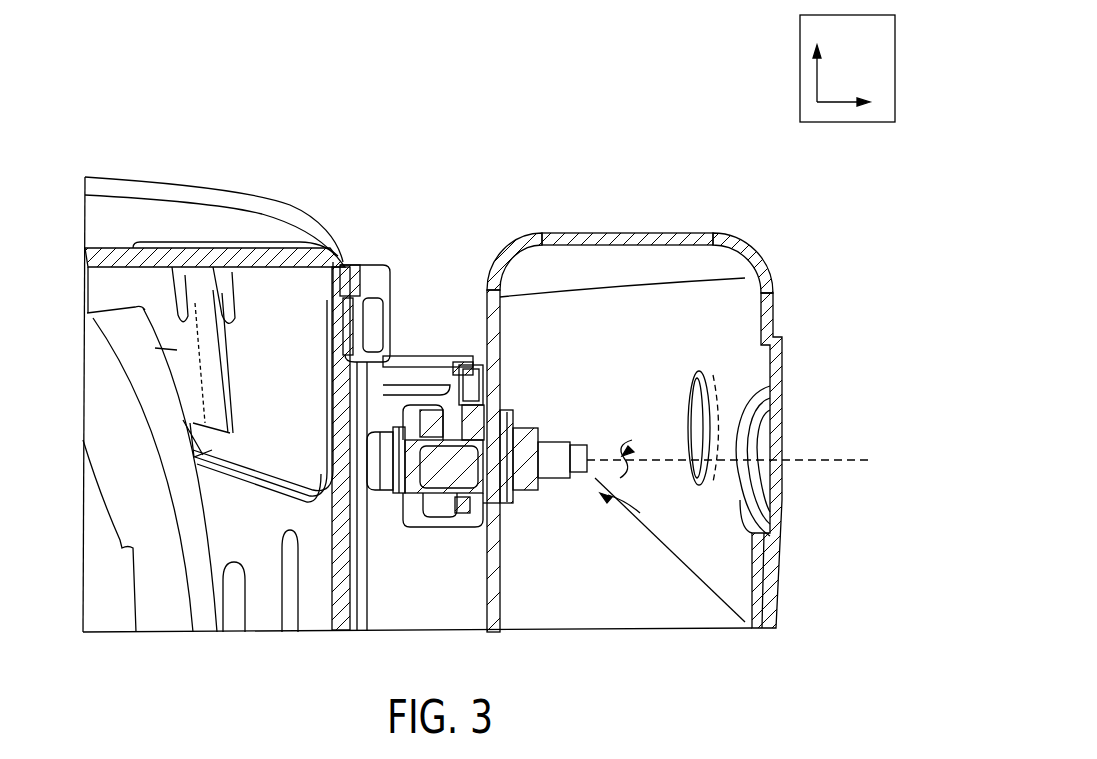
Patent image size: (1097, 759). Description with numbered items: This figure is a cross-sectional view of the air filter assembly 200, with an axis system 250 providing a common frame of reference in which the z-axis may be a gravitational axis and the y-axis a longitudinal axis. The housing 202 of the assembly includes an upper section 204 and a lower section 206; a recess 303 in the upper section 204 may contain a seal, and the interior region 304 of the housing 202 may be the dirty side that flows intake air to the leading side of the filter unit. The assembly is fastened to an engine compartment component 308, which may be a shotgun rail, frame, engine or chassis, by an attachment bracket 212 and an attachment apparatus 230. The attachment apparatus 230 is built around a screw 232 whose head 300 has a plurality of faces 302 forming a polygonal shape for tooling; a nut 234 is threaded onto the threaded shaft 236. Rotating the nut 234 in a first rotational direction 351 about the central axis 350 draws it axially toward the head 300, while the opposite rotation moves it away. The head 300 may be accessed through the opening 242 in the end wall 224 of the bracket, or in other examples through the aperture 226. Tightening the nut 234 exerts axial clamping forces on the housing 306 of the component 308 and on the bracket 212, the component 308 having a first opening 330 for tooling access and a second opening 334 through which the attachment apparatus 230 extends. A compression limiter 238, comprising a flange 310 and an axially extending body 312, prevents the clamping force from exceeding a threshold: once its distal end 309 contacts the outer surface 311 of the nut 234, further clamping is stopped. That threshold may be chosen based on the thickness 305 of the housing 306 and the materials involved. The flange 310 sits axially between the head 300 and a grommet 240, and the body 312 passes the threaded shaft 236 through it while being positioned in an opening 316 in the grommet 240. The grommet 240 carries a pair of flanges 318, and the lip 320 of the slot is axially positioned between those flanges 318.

The air filter assembly 200 is at (862, 228).
The housing 202 is at (308, 198).
The upper section 204 is at (233, 212).
The lower section 206 is at (353, 622).
The attachment bracket 212 is at (408, 356).
The end wall 224 is at (413, 356).
The aperture 226 is at (432, 548).
The attachment apparatus 230 is at (640, 513).
The screw 232 is at (588, 463).
The nut 234 is at (515, 428).
The threaded shaft 236 is at (552, 478).
The compression limiter 238 is at (437, 356).
The grommet 240 is at (485, 505).
The opening 242 is at (377, 272).
The axis system 250 is at (800, 77).
The head 300 is at (378, 500).
The faces 302 is at (383, 443).
The recess 303 is at (340, 292).
The interior region 304 is at (273, 401).
The thickness 305 is at (512, 367).
The housing 306 is at (608, 233).
The engine compartment component 308 is at (784, 278).
The distal end 309 is at (520, 433).
The flange 310 is at (410, 517).
The outer surface 311 is at (370, 476).
The body 312 is at (440, 465).
The opening 316 is at (497, 565).
The pair of flanges 318 is at (462, 363).
The lip 320 is at (456, 527).
The first opening 330 is at (777, 441).
The second opening 334 is at (515, 490).
The central axis 350 is at (670, 452).
The first rotational direction 351 is at (625, 442).